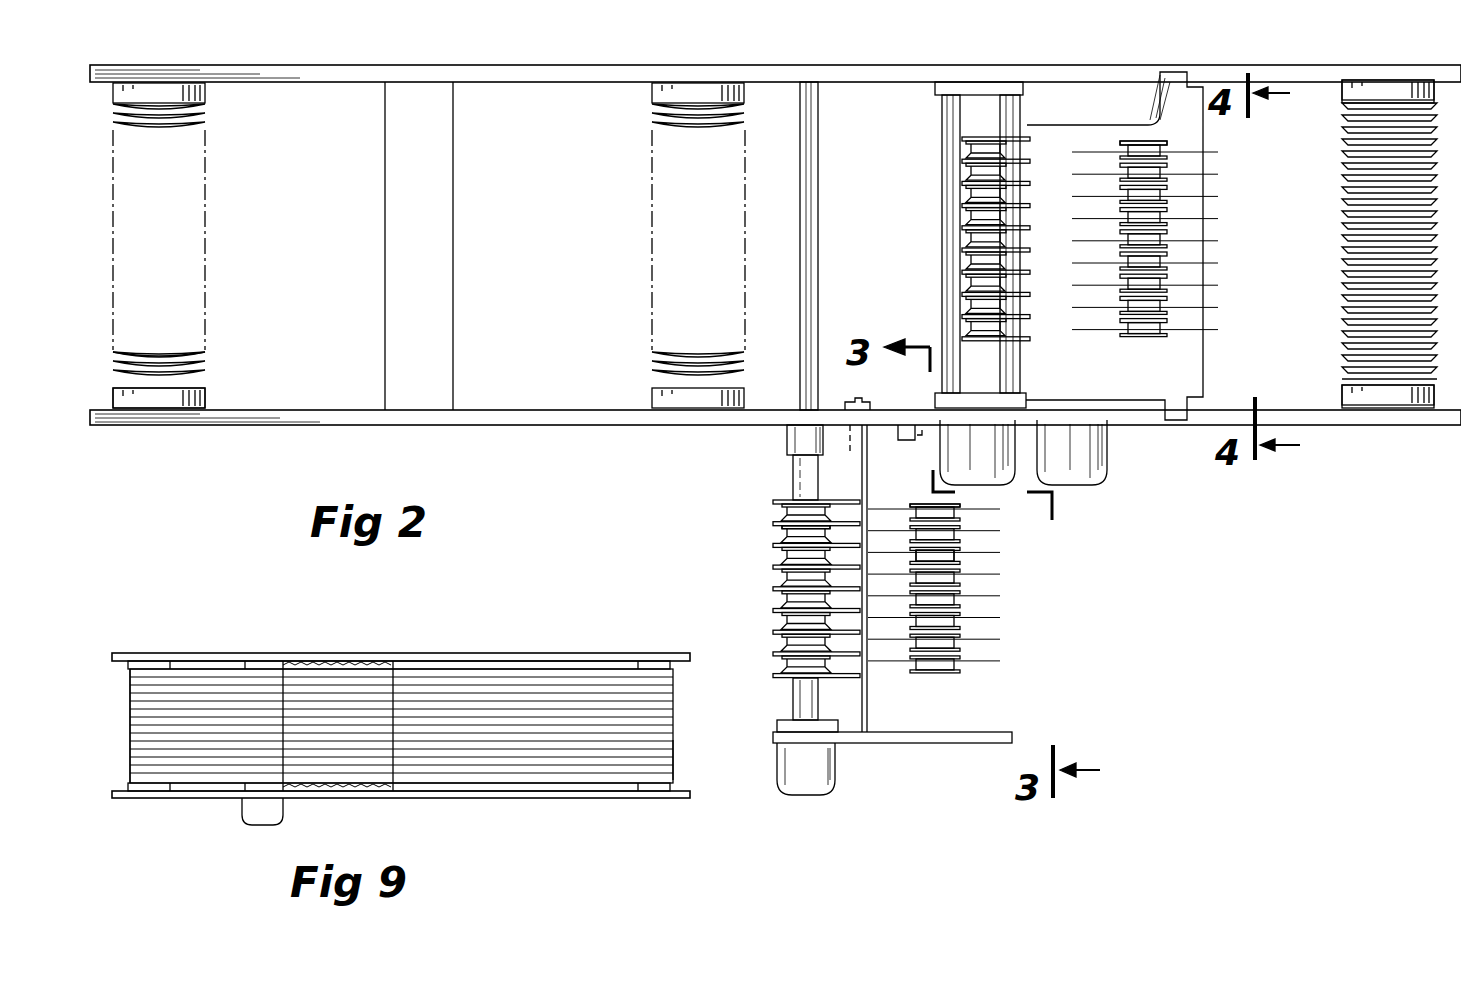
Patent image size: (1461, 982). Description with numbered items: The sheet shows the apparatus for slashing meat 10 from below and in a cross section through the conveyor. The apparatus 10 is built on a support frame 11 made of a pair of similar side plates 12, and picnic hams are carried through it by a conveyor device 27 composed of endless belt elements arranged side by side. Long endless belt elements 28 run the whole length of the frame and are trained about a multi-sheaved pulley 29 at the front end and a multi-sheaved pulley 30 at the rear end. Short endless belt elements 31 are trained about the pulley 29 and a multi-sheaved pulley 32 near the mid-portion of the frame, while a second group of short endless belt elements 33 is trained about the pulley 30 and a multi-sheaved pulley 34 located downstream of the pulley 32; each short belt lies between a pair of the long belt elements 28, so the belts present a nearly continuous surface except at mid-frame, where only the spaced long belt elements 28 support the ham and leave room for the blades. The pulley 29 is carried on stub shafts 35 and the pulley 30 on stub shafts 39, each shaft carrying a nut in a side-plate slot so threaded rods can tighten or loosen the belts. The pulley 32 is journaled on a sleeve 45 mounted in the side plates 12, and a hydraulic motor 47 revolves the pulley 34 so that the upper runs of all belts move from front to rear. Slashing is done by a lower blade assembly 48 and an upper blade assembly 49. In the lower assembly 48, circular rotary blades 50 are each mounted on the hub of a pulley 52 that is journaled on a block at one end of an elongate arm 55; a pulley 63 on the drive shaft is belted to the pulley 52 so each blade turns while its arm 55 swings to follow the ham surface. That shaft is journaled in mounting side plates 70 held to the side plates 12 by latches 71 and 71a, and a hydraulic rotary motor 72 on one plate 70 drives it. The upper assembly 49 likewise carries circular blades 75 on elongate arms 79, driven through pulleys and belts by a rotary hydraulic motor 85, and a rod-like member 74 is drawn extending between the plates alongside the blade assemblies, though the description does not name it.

In FIG. 2, the apparatus for slashing meat 10 is at (686, 492).
In FIG. 2, the support frame 11 is at (500, 66).
In FIG. 9, the support frame 11 is at (530, 653).
In FIG. 2, the side plates 12 is at (270, 65).
In FIG. 9, the side plates 12 is at (195, 653).
In FIG. 2, the conveyor device 27 is at (104, 292).
In FIG. 9, the conveyor device 27 is at (680, 695).
In FIG. 9, the long endless belt elements 28 is at (312, 690).
In FIG. 2, the multi-sheaved pulley 29 is at (205, 362).
In FIG. 9, the multi-sheaved pulley 29 is at (675, 668).
In FIG. 2, the multi-sheaved pulley 30 is at (1342, 265).
In FIG. 9, the multi-sheaved pulley 30 is at (138, 785).
In FIG. 9, the short endless belt elements 31 is at (673, 776).
In FIG. 2, the multi-sheaved pulley 32 is at (655, 118).
In FIG. 9, the multi-sheaved pulley 32 is at (433, 792).
In FIG. 9, the short endless belt elements 33 is at (130, 708).
In FIG. 9, the multi-sheaved pulley 34 is at (245, 785).
In FIG. 2, the stub shafts 35 is at (205, 395).
In FIG. 2, the stub shafts 39 is at (1346, 92).
In FIG. 2, the sleeve 45 is at (655, 395).
In FIG. 2, the hydraulic motor 47 is at (1107, 450).
In FIG. 2, the lower blade assembly 48 is at (1025, 565).
In FIG. 2, the upper blade assembly 49 is at (1072, 348).
In FIG. 2, the circular rotary blades 50 is at (1000, 528).
In FIG. 9, the circular rotary blades 50 is at (300, 700).
In FIG. 2, the pulley 52 is at (955, 583).
In FIG. 2, the elongate arm 55 is at (867, 670).
In FIG. 2, the pulley 63 is at (782, 576).
In FIG. 2, the mounting side plates 70 is at (1000, 732).
In FIG. 2, the latch 71 is at (908, 440).
In FIG. 2, the latch 71a is at (862, 400).
In FIG. 2, the hydraulic rotary motor 72 is at (835, 790).
In FIG. 2, the rod 74 is at (818, 106).
In FIG. 2, the circular blades 75 is at (1212, 173).
In FIG. 9, the circular blades 75 is at (374, 710).
In FIG. 2, the elongate arm 79 is at (1048, 183).
In FIG. 2, the rotary hydraulic motor 85 is at (952, 450).